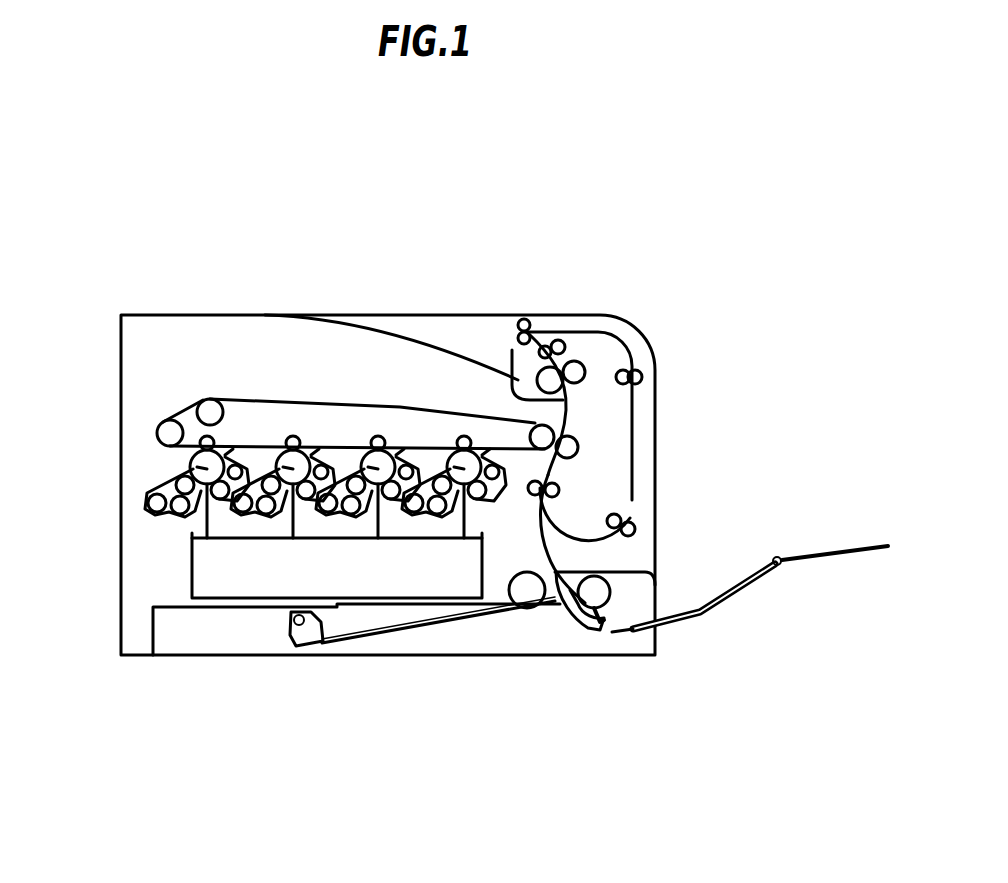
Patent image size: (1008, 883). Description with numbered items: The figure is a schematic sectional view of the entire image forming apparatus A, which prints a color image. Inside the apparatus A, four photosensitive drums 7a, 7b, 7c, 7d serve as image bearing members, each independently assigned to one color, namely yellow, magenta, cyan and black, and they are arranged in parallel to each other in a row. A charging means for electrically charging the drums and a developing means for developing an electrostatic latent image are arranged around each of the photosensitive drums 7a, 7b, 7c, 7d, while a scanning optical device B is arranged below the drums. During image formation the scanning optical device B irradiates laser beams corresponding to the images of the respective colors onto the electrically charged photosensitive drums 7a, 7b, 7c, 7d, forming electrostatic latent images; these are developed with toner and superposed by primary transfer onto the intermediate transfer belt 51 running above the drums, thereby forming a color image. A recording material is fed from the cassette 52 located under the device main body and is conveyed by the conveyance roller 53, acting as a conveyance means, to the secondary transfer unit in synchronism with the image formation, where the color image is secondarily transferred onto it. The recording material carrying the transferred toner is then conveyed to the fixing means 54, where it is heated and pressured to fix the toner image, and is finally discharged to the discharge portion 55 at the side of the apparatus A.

The image forming apparatus A is at (114, 291).
The scanning optical device B is at (192, 572).
The intermediate transfer belt 51 is at (235, 400).
The cassette 52 is at (243, 637).
The conveyance roller 53 is at (548, 490).
The fixing means 54 is at (578, 368).
The discharge portion 55 is at (408, 340).
The photosensitive drum 7a is at (464, 445).
The photosensitive drum 7b is at (378, 445).
The photosensitive drum 7c is at (293, 445).
The photosensitive drum 7d is at (190, 460).